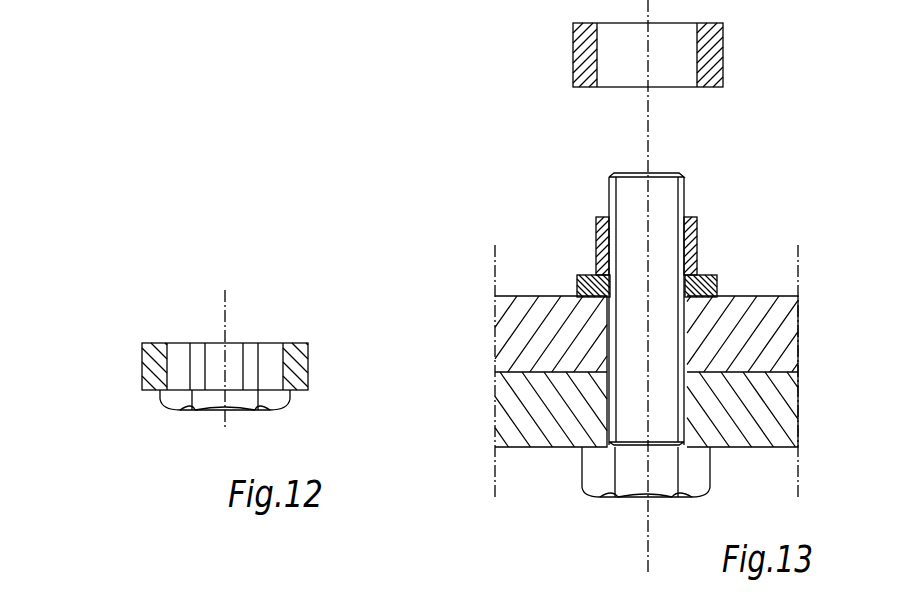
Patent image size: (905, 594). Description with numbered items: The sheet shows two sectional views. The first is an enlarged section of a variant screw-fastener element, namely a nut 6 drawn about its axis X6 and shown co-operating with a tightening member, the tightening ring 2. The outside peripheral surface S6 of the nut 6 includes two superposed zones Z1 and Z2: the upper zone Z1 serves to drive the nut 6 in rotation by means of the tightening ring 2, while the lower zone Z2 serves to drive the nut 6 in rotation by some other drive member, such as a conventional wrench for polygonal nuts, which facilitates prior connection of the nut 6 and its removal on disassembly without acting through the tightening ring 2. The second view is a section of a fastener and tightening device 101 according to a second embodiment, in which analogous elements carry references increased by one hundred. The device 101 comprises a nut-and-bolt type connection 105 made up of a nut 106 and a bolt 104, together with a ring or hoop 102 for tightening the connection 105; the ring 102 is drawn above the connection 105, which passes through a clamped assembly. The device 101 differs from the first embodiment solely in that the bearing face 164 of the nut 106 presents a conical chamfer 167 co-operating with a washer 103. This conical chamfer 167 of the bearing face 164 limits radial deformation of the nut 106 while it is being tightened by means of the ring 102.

In FIG. 12, the tightening ring 2 is at (311, 357).
In FIG. 12, the nut 6 is at (298, 397).
In FIG. 12, the outside peripheral surface S6 is at (85, 340).
In FIG. 12, the first zone Z1 is at (163, 355).
In FIG. 12, the second zone Z2 is at (156, 397).
In FIG. 12, the nut axis X6 is at (237, 292).
In FIG. 13, the fastener and tightening device 101 is at (424, 132).
In FIG. 13, the ring 102 is at (553, 83).
In FIG. 13, the washer 103 is at (719, 279).
In FIG. 13, the bolt 104 is at (601, 187).
In FIG. 13, the nut-and-bolt type connection 105 is at (471, 148).
In FIG. 13, the nut 106 is at (593, 240).
In FIG. 13, the bearing face 164 is at (595, 290).
In FIG. 13, the conical chamfer 167 is at (688, 287).